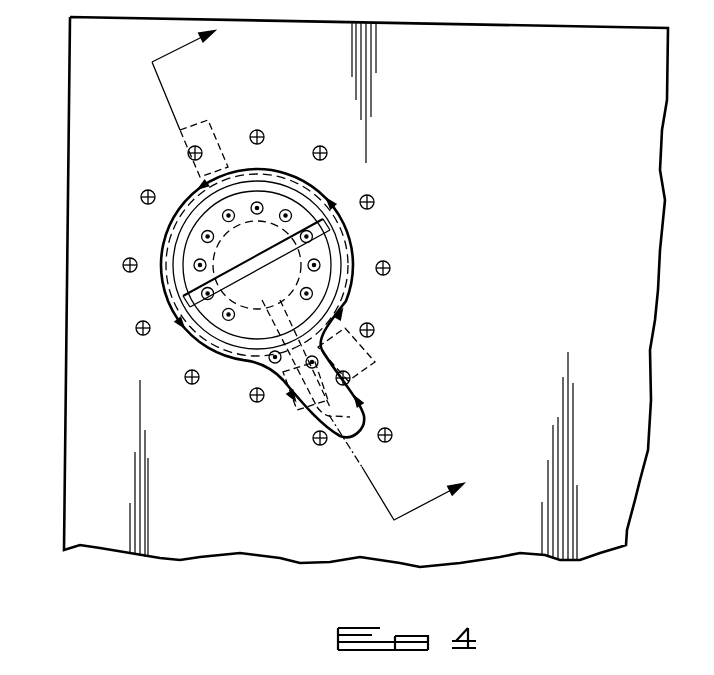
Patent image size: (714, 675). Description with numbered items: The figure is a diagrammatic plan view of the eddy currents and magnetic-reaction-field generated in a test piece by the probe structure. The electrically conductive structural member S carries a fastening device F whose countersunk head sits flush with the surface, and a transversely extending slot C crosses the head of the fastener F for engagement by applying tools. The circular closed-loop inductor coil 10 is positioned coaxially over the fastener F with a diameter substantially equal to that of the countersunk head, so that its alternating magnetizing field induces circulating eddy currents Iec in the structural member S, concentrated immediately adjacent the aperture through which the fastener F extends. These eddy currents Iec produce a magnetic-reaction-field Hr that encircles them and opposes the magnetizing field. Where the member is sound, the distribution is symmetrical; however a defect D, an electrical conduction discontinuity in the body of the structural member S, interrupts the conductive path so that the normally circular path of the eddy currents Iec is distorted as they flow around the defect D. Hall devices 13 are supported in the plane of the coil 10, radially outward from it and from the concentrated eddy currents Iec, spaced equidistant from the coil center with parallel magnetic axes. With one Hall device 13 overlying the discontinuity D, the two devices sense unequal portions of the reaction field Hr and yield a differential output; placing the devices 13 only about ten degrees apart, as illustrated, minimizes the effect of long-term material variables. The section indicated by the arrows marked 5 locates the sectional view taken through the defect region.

The closed-loop inductor coil 10 is at (258, 300).
The Hall device 13 is at (207, 120).
The fastening device F is at (183, 243).
The slot C is at (180, 303).
The eddy currents Iec is at (351, 233).
The magnetic-reaction-field Hr is at (390, 270).
The structural member S is at (63, 389).
The defect D is at (306, 385).
The section line 5- 5 is at (214, 46).